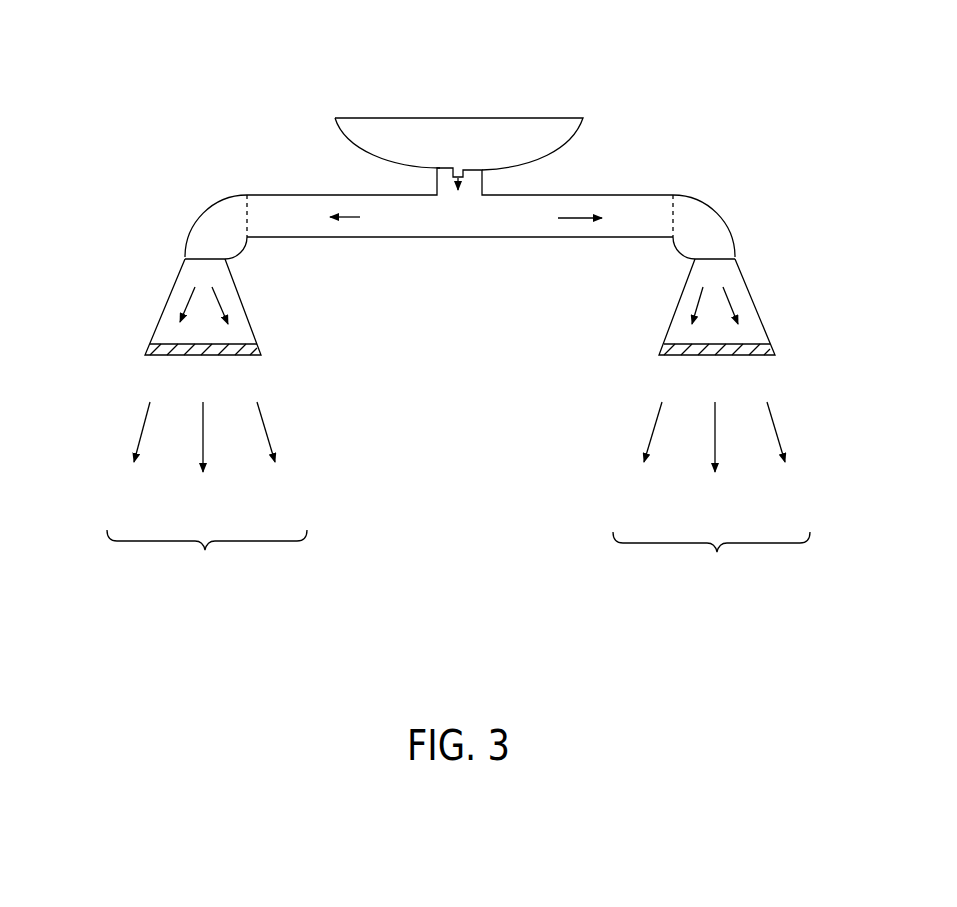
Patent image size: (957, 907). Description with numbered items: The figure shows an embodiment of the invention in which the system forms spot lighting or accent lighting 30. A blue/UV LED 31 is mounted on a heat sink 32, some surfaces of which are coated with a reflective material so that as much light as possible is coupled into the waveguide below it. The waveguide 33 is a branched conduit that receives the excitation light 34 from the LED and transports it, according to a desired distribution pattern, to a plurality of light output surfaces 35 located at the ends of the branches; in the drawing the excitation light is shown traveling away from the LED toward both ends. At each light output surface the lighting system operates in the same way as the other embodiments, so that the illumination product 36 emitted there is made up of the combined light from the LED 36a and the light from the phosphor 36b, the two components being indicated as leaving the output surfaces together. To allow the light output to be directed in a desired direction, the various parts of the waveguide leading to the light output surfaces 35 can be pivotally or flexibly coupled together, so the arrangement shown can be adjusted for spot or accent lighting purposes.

The spot lighting and/or accent lighting system 30 is at (213, 628).
The blue/UV LED 31 is at (470, 171).
The heat sink 32 is at (507, 140).
The waveguide 33 is at (702, 215).
The excitation light 34 is at (578, 227).
The light output surfaces 35 is at (168, 342).
The illumination product 36 is at (464, 482).
The light from the LED 36a is at (203, 432).
The light from the phosphor 36b is at (270, 442).